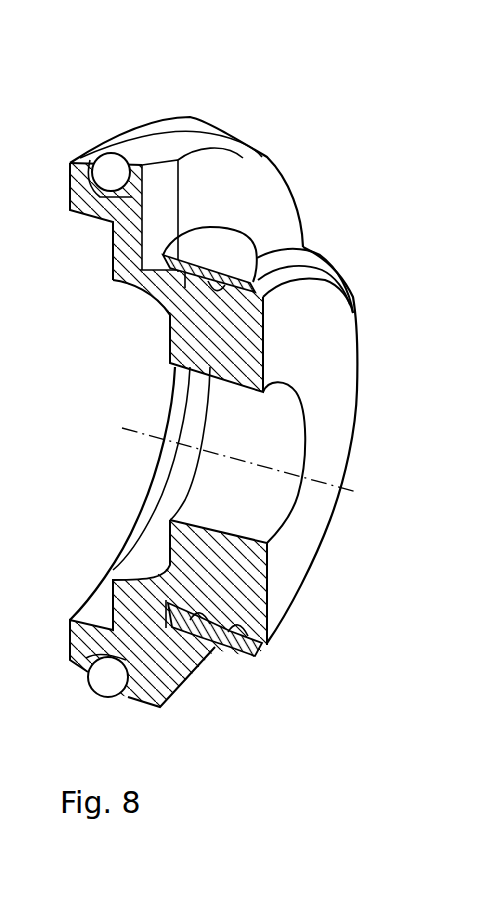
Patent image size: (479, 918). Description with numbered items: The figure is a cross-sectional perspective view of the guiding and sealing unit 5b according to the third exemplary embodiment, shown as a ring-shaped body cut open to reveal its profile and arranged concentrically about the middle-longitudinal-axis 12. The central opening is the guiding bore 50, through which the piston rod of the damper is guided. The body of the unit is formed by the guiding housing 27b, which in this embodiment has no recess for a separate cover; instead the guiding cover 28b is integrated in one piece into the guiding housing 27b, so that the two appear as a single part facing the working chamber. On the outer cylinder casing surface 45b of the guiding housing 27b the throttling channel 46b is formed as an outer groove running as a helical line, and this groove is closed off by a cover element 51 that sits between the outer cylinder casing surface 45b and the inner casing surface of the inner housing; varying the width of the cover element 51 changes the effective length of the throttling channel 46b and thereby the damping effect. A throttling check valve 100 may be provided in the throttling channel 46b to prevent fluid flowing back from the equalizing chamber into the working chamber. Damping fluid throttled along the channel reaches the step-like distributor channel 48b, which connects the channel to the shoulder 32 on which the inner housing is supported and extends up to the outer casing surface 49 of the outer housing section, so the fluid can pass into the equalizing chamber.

The guiding and sealing unit 5b is at (317, 112).
The middle-longitudinal-axis 12 is at (312, 477).
The guiding housing 27b is at (212, 114).
The guiding cover 28b is at (350, 347).
The shoulder 32 is at (243, 158).
The outer cylinder casing surface 45b is at (258, 276).
The throttling channel 46b is at (300, 300).
The distributor channel 48b is at (138, 133).
The outer casing surface 49 is at (177, 180).
The guiding bore 50 is at (302, 450).
The cover element 51 is at (265, 258).
The throttling check valve 100 is at (232, 250).